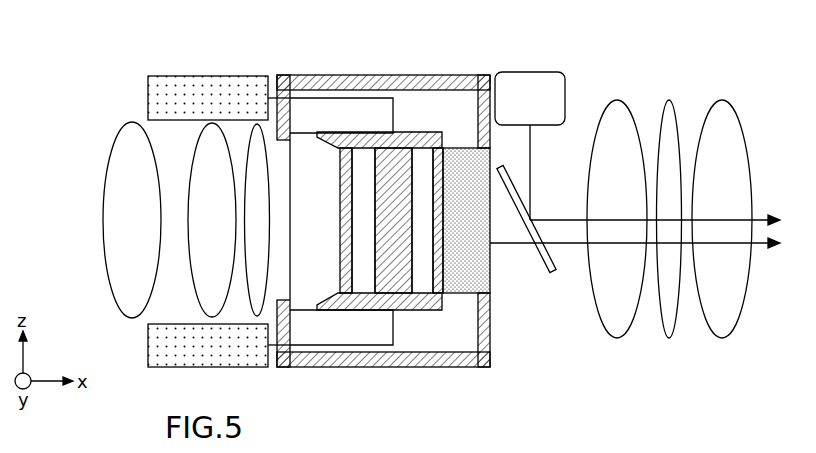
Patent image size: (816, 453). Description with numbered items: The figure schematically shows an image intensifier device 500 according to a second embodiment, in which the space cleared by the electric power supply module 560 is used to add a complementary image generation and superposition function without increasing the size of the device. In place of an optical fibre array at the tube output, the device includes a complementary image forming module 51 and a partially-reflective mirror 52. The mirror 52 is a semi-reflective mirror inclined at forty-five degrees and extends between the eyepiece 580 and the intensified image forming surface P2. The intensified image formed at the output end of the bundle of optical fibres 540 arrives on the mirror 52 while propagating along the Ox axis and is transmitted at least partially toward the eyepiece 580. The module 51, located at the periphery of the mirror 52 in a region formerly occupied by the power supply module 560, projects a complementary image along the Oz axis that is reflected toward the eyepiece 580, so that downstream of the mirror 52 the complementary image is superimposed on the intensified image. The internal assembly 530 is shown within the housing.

The image intensifier device 500 is at (97, 80).
The electric power supply module 560 is at (208, 82).
The optical element assembly 530 is at (436, 265).
The bundle of optical fibres 540 is at (460, 285).
The intensified image forming surface P2 is at (488, 198).
The complementary image forming module 51 is at (513, 82).
The partially-reflective mirror 52 is at (556, 275).
The eyepiece 580 is at (743, 92).